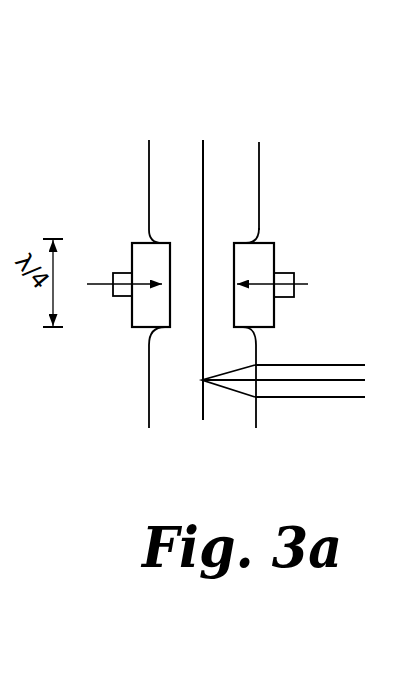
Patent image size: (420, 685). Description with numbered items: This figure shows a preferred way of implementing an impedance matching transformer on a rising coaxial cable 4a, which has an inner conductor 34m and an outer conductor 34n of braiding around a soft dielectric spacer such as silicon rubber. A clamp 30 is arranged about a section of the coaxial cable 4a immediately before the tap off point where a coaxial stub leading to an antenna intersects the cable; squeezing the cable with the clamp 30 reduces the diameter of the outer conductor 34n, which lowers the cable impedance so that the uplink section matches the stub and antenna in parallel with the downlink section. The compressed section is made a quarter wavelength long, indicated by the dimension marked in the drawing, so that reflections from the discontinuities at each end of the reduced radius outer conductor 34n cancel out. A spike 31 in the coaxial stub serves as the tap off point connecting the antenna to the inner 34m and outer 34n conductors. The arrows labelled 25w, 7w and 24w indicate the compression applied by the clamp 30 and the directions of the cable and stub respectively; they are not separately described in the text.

The clamp 30 is at (130, 237).
The inner conductor 34m is at (207, 153).
The outer conductor 34n is at (262, 151).
The coaxial cable 4a is at (262, 203).
The incident wave 25w is at (313, 275).
The reflected wave 7w is at (132, 373).
The spike 31 is at (222, 398).
The radiated wave 24w is at (323, 400).